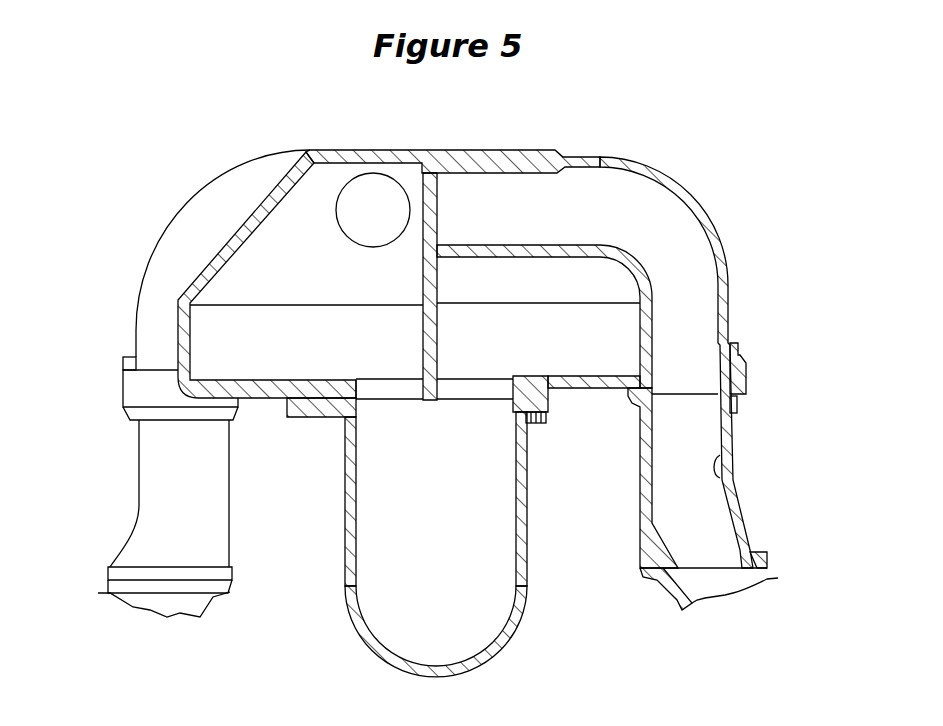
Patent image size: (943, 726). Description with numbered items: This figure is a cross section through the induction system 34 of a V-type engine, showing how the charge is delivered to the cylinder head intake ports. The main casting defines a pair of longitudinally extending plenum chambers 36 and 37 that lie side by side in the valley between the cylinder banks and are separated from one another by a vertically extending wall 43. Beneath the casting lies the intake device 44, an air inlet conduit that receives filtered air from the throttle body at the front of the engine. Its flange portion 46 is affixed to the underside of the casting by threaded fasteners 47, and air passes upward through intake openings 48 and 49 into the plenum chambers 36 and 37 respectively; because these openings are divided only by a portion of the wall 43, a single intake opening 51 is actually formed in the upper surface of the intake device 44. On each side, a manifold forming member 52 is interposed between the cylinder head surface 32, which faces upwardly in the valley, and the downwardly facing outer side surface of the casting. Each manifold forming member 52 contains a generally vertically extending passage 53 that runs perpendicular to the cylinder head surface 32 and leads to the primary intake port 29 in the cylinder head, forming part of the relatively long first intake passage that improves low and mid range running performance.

The primary intake port 29 is at (745, 576).
The cylinder head surface 32 is at (125, 568).
The induction system 34 is at (681, 150).
The plenum chamber 36 is at (340, 358).
The plenum chamber 37 is at (543, 352).
The vertically extending wall 43 is at (421, 298).
The intake device 44 is at (513, 638).
The flange portion 46 is at (289, 416).
The threaded fasteners 47 is at (535, 424).
The intake opening 48 is at (356, 383).
The intake opening 49 is at (513, 378).
The single intake opening 51 is at (514, 412).
The manifold forming member 52 is at (138, 472).
The vertically extending passage 53 is at (728, 490).